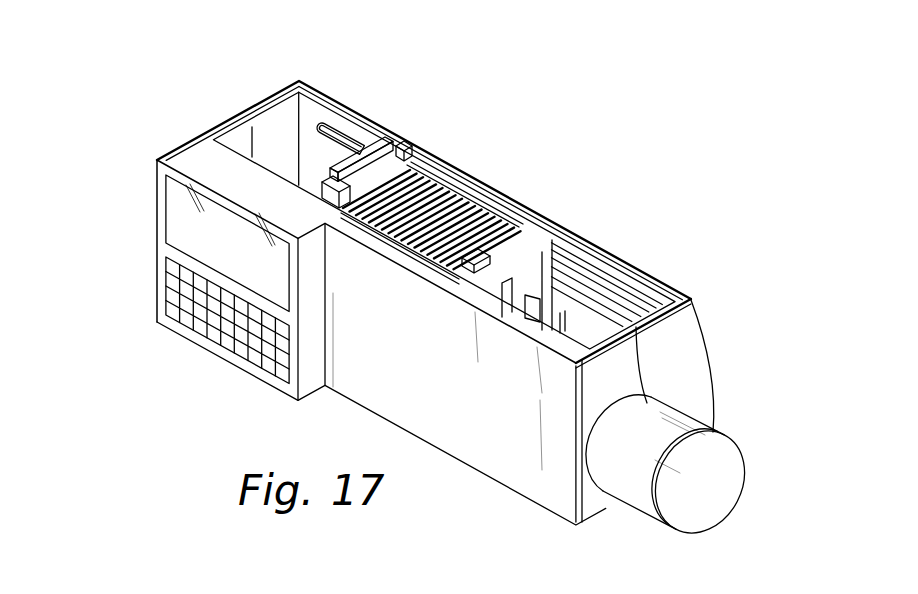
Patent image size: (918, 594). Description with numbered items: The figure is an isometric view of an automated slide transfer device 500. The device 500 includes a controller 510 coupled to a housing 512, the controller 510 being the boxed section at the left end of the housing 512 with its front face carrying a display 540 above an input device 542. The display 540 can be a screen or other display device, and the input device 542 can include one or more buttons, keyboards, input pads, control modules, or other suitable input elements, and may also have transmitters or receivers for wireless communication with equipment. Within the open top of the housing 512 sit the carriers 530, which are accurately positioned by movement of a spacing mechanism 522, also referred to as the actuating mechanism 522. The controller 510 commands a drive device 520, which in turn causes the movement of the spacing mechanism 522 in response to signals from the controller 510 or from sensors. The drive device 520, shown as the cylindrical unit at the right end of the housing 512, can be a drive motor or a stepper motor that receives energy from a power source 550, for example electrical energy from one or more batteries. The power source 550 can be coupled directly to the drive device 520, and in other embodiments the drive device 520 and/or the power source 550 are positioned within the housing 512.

The automated slide transfer device 500 is at (513, 175).
The controller 510 is at (178, 144).
The housing 512 is at (617, 257).
The drive device 520 is at (682, 410).
The spacing mechanism 522 is at (337, 150).
The carriers 530 is at (428, 150).
The display 540 is at (165, 208).
The input device 542 is at (167, 287).
The power source 550 is at (713, 503).